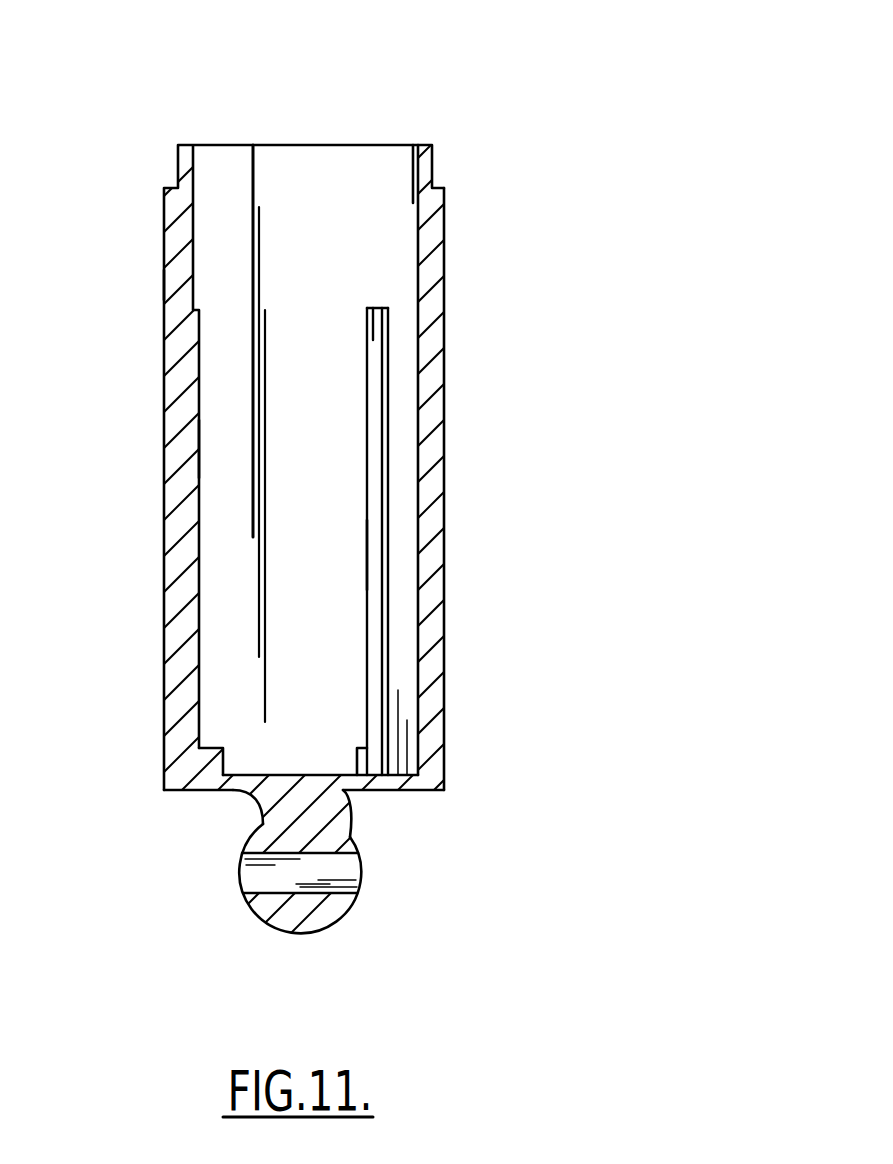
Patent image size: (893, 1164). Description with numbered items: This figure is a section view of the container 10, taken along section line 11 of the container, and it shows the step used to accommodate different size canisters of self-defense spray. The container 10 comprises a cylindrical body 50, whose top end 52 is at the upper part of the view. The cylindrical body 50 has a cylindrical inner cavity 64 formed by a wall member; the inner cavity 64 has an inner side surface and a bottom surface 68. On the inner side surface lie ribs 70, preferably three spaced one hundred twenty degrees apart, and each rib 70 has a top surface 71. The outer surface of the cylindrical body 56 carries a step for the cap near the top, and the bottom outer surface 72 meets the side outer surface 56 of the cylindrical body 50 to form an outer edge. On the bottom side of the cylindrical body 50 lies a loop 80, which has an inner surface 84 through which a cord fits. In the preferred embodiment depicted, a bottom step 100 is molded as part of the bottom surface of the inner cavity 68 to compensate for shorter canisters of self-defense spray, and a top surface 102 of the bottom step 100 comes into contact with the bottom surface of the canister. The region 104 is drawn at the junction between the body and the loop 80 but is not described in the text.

The container 10 is at (446, 582).
The section line 11— 11 is at (282, 508).
The cylindrical body 50 is at (492, 412).
The top end 52 is at (280, 130).
The side outer surface 56 is at (165, 538).
The inner cavity 64 is at (363, 173).
The bottom surface 68 is at (293, 773).
The rib 70 is at (197, 480).
The top surface of rib 71 is at (167, 285).
The bottom outer surface 72 is at (188, 790).
The loop 80 is at (352, 916).
The inner surface of loop 84 is at (250, 874).
The bottom step 100 is at (223, 735).
The top surface of bottom step 102 is at (225, 752).
The neck 104 is at (344, 798).